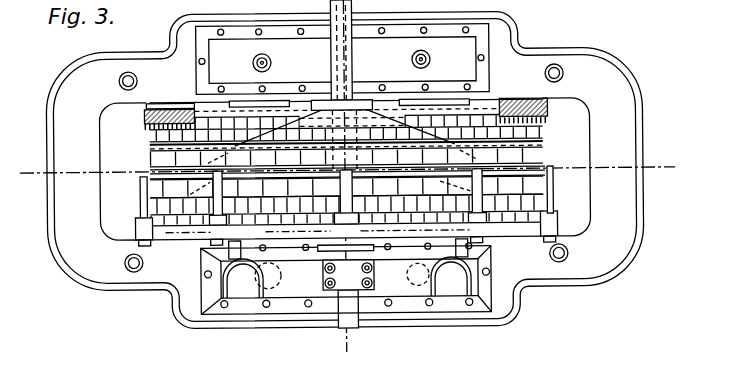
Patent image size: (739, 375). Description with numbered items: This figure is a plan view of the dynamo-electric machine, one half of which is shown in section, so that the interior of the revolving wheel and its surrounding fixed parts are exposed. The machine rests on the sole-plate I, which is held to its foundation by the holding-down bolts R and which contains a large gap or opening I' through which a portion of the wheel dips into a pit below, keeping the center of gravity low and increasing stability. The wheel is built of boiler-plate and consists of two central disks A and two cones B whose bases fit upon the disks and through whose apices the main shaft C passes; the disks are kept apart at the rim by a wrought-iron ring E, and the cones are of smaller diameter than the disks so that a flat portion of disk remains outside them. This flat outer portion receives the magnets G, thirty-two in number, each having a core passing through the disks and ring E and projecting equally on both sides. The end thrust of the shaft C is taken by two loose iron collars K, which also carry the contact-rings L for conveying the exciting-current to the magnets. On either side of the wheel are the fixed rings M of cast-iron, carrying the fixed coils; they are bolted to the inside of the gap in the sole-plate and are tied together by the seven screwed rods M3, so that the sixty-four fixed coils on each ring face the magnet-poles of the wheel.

The sole-plate I is at (345, 170).
The gap or opening I' is at (344, 169).
The holding-down bolts R is at (346, 168).
The main shaft C is at (342, 164).
The fixed rings M is at (508, 249).
The screwed rods M3 is at (559, 189).
The cones B is at (344, 127).
The magnets G is at (346, 156).
The central disks A is at (553, 148).
The wrought-iron ring E is at (548, 168).
The contact-rings L is at (322, 251).
The loose iron collars K is at (375, 262).